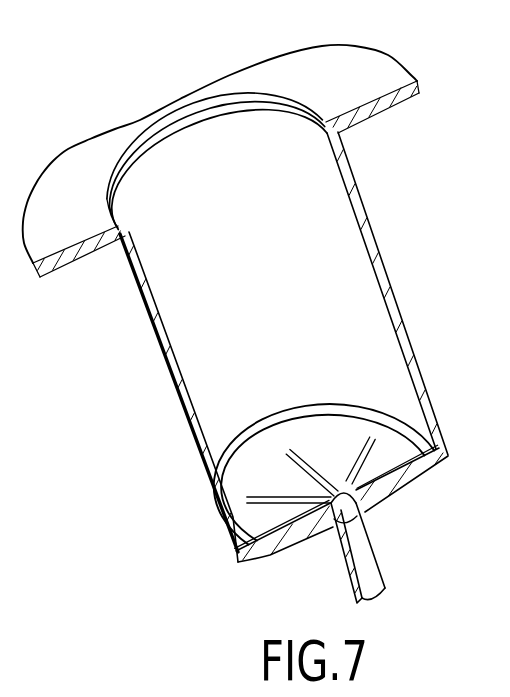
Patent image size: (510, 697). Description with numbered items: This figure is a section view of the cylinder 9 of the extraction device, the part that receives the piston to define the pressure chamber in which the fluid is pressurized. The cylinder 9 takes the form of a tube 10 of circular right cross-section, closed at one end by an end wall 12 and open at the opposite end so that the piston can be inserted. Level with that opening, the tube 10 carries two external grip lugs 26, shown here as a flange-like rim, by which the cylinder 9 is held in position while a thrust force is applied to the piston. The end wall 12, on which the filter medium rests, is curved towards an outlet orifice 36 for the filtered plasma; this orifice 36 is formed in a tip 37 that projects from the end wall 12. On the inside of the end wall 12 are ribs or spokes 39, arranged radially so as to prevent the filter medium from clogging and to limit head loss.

The external grip lugs 26 is at (380, 62).
The cylinder 9 is at (371, 218).
The tube 10 is at (170, 369).
The end wall 12 is at (398, 482).
The ribs or spokes 39 is at (374, 441).
The outlet orifice 36 is at (368, 578).
The tip 37 is at (344, 574).